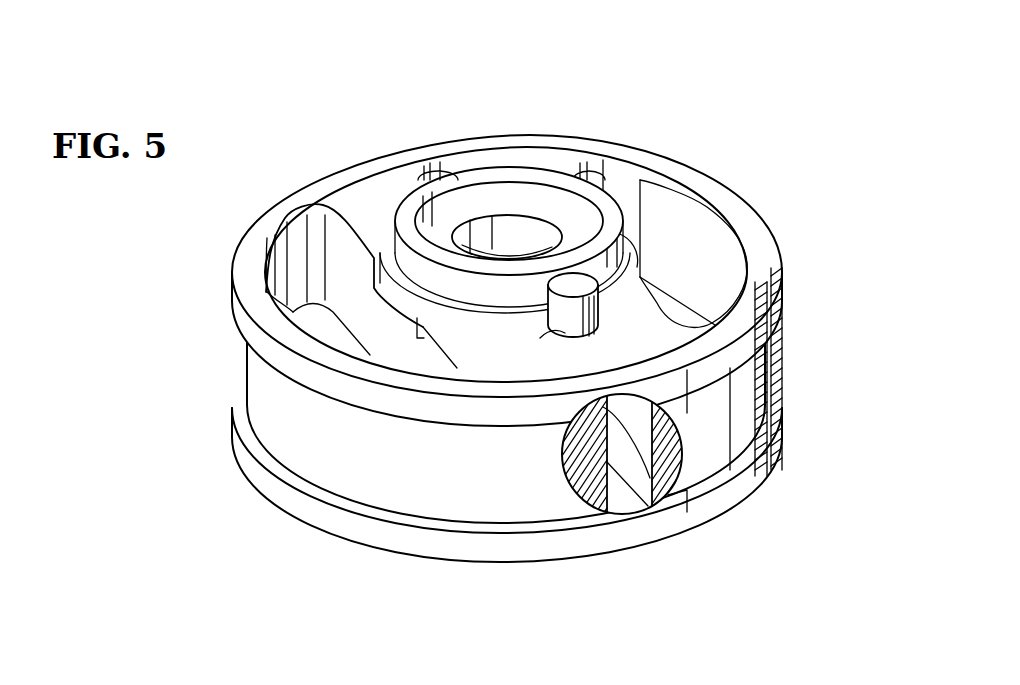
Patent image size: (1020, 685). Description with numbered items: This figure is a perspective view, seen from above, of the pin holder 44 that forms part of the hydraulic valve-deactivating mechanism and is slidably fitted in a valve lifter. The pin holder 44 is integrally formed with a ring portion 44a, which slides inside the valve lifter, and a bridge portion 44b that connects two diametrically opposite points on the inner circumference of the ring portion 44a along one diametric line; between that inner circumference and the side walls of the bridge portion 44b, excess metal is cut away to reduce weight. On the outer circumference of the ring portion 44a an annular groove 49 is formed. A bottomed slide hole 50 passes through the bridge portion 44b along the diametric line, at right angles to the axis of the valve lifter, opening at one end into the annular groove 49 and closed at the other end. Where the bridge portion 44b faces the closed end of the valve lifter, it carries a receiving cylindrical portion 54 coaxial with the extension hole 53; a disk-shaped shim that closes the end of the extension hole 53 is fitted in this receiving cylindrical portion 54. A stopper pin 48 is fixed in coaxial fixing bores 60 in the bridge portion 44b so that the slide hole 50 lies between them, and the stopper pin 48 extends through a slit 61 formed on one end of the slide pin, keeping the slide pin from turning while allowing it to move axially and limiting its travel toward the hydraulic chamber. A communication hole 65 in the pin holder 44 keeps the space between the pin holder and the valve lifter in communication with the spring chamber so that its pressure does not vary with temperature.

The pin holder 44 is at (541, 132).
The ring portion 44a is at (716, 194).
The bridge portion 44b is at (632, 321).
The stopper pin 48 is at (577, 283).
The annular groove 49 is at (766, 357).
The slide hole 50 is at (637, 514).
The extension hole 53 is at (513, 227).
The receiving cylindrical portion 54 is at (410, 207).
The fixing bores 60 is at (547, 325).
The slit 61 is at (627, 427).
The communication hole 65 is at (433, 160).